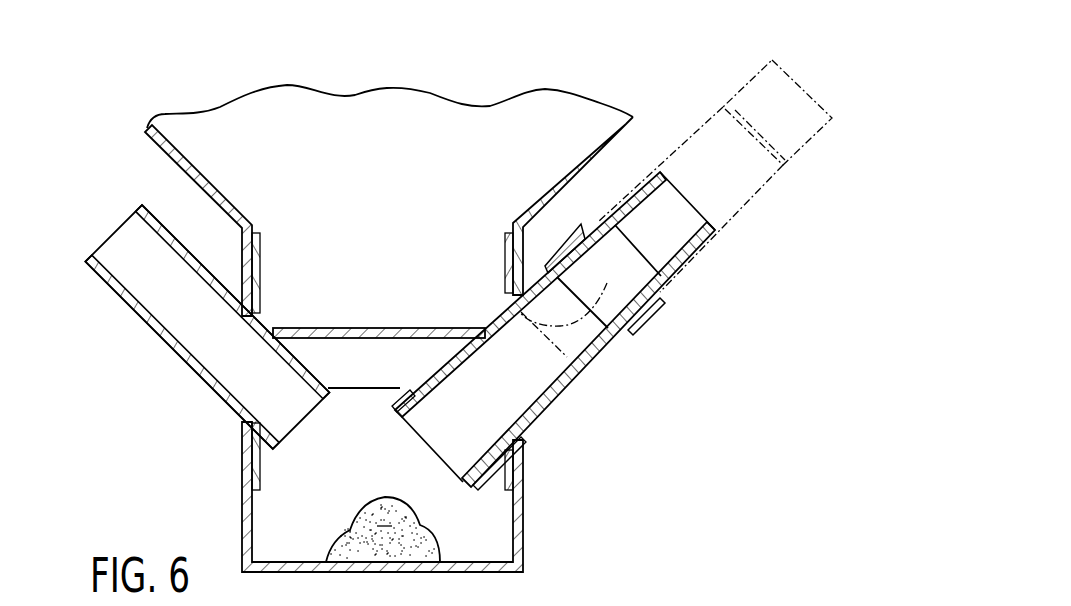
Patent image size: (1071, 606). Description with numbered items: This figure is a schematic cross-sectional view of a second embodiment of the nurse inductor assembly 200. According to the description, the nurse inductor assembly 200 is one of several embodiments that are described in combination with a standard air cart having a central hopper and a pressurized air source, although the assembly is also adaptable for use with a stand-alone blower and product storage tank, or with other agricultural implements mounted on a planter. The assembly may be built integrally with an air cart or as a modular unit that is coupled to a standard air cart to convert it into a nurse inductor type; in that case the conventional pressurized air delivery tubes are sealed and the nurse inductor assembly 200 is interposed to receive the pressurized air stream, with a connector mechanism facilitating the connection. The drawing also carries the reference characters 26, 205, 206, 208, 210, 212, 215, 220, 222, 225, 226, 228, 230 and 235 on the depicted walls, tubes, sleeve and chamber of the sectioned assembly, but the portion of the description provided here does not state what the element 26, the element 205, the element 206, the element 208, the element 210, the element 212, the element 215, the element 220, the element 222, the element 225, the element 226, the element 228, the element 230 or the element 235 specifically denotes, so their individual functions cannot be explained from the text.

The upper body / hopper wall 26 is at (148, 140).
The nurse inductor assembly 200 is at (660, 434).
The container body 205 is at (472, 580).
The left side wall 206 is at (242, 460).
The right side wall 208 is at (524, 472).
The bottom wall 210 is at (380, 572).
The chamber 212 is at (492, 527).
The left inlet tube 215 is at (130, 318).
The right tube 220 is at (625, 352).
The removable sleeve 222 is at (595, 218).
The tube bore / passage 225 is at (548, 394).
The opening 226 is at (355, 432).
The end cap 228 is at (700, 256).
The sealing ring 230 is at (663, 298).
The partition plate 235 is at (365, 380).